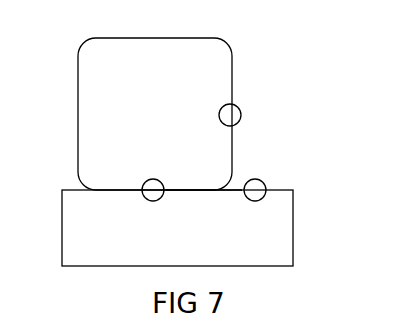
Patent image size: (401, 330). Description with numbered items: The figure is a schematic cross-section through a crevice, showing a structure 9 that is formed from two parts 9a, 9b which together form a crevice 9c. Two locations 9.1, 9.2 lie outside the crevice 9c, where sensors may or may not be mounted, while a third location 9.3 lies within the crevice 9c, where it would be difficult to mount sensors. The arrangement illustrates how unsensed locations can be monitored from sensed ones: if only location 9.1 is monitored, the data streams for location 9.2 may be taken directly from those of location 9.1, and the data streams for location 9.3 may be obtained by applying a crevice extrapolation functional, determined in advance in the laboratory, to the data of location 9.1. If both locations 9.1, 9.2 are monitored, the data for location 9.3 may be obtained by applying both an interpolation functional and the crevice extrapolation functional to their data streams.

The structure 9 is at (273, 58).
The part 9a is at (97, 80).
The part 9b is at (270, 245).
The crevice 9c is at (195, 193).
The location 9.1 is at (236, 114).
The location 9.2 is at (252, 180).
The location 9.3 is at (158, 186).